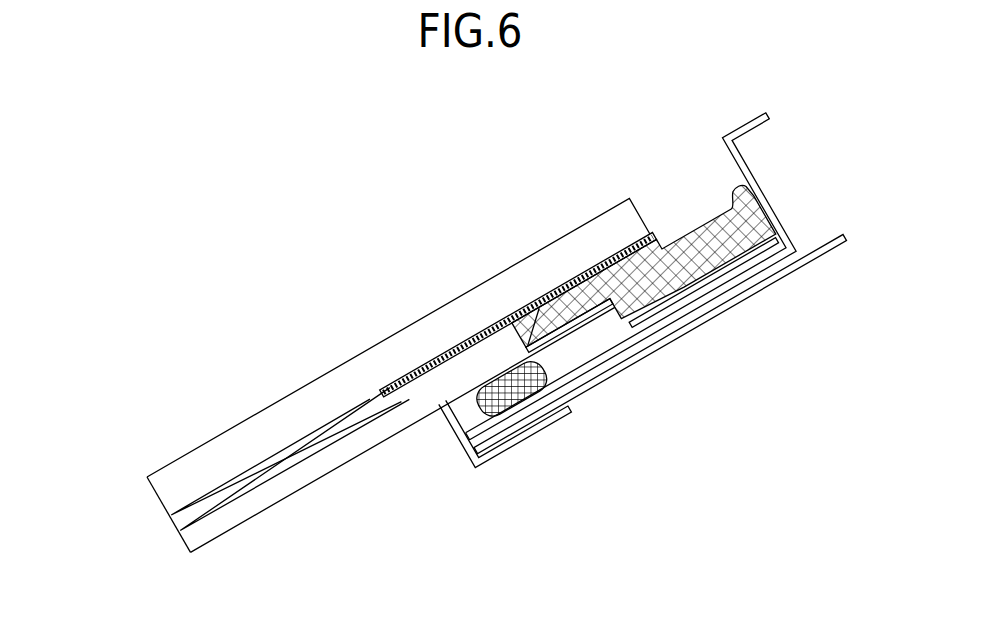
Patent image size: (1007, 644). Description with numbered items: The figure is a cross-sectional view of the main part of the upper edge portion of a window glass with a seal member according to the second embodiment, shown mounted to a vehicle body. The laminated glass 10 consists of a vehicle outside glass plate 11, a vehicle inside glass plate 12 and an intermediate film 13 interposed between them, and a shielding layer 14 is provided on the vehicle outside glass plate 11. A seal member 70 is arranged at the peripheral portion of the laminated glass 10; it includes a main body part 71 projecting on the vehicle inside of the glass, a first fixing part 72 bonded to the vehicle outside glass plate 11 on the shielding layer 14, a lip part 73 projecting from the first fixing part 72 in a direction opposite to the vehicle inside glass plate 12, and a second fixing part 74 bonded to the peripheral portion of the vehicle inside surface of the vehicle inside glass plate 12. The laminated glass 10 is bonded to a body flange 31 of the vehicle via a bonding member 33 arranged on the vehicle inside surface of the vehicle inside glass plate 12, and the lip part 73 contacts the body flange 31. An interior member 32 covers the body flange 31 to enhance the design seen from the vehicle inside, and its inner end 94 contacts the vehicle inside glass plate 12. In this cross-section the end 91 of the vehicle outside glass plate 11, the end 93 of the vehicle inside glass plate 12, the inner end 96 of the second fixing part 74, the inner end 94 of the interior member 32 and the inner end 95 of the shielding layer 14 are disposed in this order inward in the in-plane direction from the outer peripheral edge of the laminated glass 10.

The laminated glass 10 is at (281, 391).
The vehicle outside glass plate 11 is at (148, 499).
The vehicle inside glass plate 12 is at (179, 544).
The intermediate film 13 is at (172, 521).
The shielding layer 14 is at (431, 360).
The body flange 31 is at (753, 157).
The interior member 32 is at (847, 247).
The bonding member 33 is at (485, 412).
The seal member 70 is at (673, 244).
The main body part 71 is at (669, 314).
The first fixing part 72 is at (594, 311).
The lip part 73 is at (725, 260).
The second fixing part 74 is at (524, 350).
The end of the vehicle outside glass plate 91 is at (605, 398).
The end of the vehicle inside glass plate 93 is at (606, 460).
The inner end of the interior member 94 is at (509, 524).
The inner end of the shielding layer 95 is at (448, 500).
The inner end of the second fixing part 96 is at (582, 477).